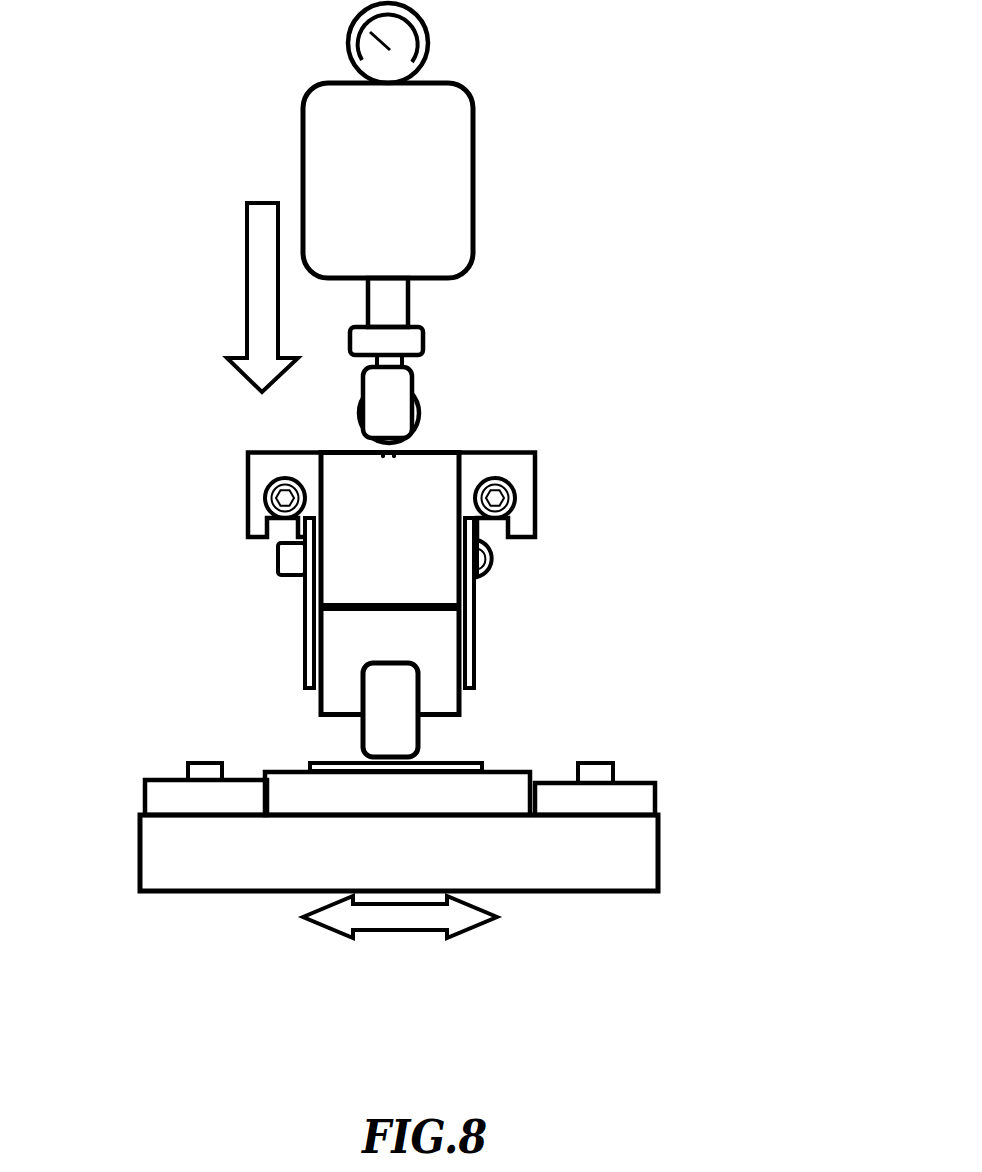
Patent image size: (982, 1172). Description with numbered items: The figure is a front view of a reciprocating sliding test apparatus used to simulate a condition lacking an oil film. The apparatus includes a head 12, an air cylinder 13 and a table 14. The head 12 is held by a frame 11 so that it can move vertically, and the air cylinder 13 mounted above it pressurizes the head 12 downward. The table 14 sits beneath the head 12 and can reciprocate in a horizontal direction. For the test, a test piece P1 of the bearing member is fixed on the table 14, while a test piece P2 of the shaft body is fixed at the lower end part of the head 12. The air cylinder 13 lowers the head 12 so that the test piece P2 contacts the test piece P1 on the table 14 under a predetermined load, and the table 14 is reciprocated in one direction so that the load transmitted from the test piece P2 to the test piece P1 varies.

The frame 11 is at (278, 568).
The head 12 is at (422, 590).
The air cylinder 13 is at (413, 237).
The table 14 is at (620, 847).
The test piece of the bearing member P1 is at (323, 767).
The test piece of the shaft body P2 is at (400, 728).